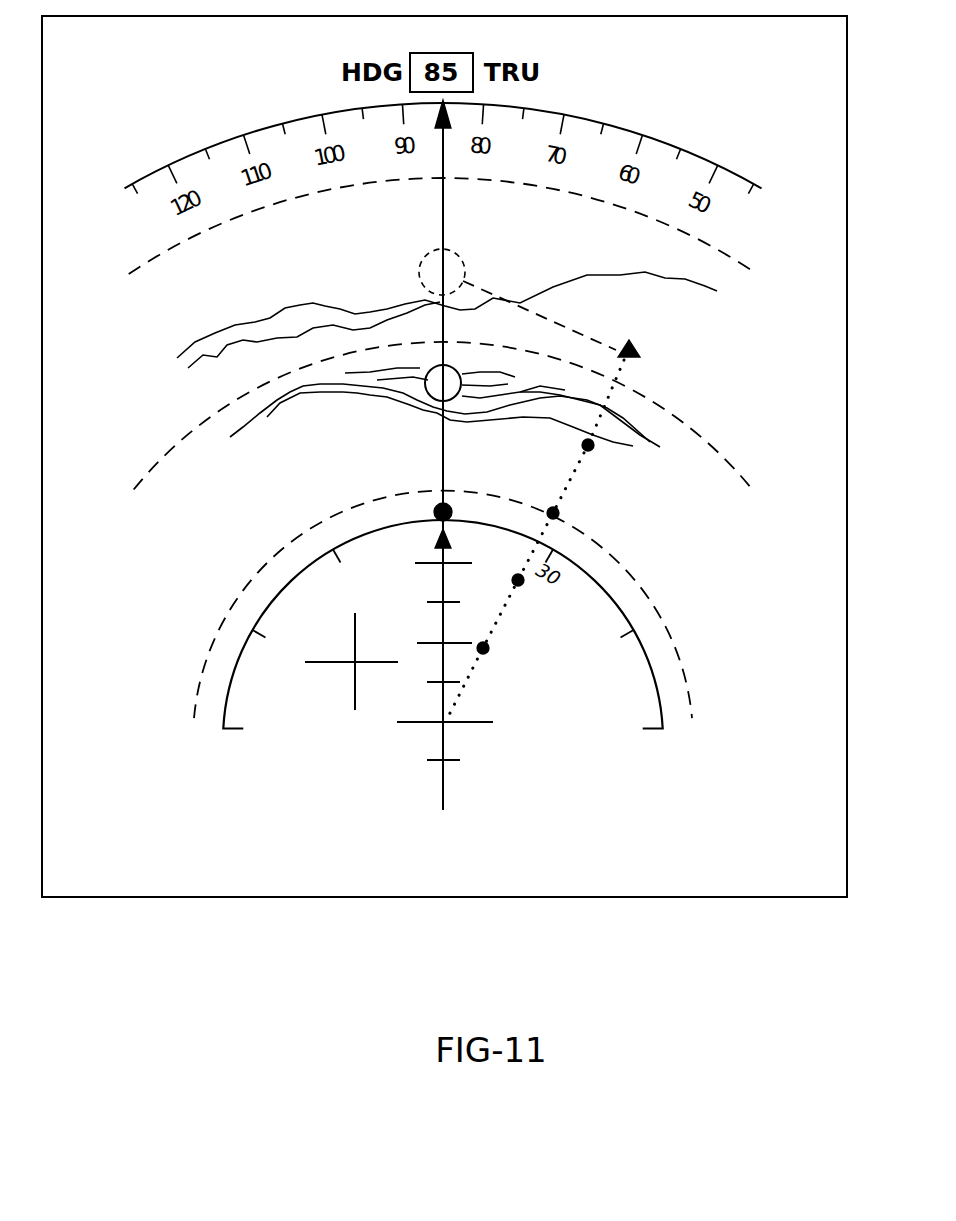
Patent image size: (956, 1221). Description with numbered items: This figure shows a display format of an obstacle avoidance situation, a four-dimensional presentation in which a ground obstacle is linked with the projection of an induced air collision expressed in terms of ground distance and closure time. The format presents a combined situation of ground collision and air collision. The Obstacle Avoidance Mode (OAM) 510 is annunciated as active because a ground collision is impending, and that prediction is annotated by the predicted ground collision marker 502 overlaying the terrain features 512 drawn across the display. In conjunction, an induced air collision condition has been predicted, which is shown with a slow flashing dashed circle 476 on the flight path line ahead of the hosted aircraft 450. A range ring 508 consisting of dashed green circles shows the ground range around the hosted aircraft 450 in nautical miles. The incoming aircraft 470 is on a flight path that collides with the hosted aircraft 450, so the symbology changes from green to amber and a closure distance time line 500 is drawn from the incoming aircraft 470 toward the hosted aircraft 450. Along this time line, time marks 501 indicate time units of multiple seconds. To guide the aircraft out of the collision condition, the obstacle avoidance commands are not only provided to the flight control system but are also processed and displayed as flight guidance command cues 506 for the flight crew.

The hosted aircraft 450 is at (445, 787).
The incoming aircraft 470 is at (640, 347).
The slow flashing dashed circle 476 is at (440, 268).
The closure distance time line 500 is at (569, 483).
The time marks 501 is at (493, 648).
The predicted ground collision marker 502 is at (440, 393).
The flight guidance command cues 506 is at (337, 662).
The range ring 508 is at (150, 488).
The Obstacle Avoidance Mode (OAM) 510 is at (710, 55).
The terrain features 512 is at (187, 348).